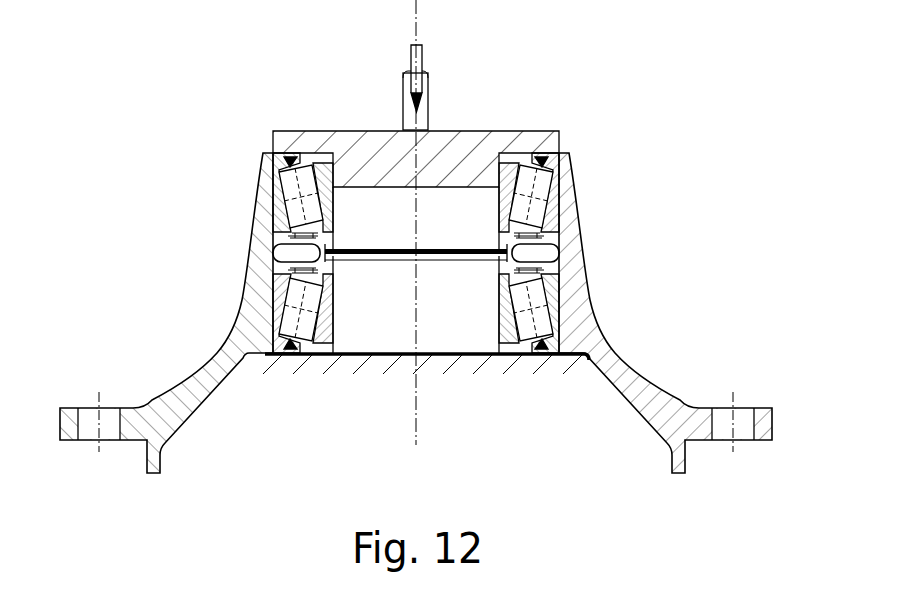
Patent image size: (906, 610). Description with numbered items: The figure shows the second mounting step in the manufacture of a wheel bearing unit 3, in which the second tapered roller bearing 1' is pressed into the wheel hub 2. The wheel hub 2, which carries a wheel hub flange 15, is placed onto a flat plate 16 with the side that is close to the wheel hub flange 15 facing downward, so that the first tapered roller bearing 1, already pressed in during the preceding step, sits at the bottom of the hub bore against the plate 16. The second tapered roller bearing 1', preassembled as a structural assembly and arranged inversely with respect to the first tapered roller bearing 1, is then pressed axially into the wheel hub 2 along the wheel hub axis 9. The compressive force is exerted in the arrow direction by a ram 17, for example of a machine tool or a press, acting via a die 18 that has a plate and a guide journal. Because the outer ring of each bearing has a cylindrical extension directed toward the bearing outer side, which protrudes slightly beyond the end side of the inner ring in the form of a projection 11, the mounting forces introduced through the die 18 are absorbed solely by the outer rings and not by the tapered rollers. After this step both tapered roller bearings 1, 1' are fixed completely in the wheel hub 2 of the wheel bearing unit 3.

The first tapered roller bearing 1 is at (416, 298).
The second tapered roller bearing 1' is at (416, 218).
The wheel hub 2 is at (590, 255).
The wheel bearing unit 3 is at (567, 103).
The wheel hub axis 9 is at (416, 408).
The projection 11 is at (275, 153).
The wheel hub flange 15 is at (133, 406).
The flat plate 16 is at (352, 372).
The ram 17 is at (404, 85).
The die 18 is at (465, 130).